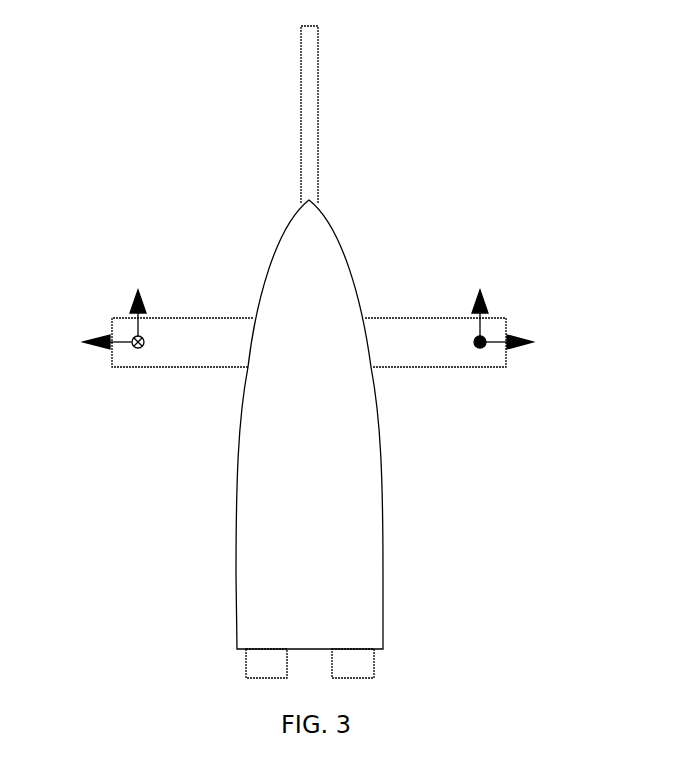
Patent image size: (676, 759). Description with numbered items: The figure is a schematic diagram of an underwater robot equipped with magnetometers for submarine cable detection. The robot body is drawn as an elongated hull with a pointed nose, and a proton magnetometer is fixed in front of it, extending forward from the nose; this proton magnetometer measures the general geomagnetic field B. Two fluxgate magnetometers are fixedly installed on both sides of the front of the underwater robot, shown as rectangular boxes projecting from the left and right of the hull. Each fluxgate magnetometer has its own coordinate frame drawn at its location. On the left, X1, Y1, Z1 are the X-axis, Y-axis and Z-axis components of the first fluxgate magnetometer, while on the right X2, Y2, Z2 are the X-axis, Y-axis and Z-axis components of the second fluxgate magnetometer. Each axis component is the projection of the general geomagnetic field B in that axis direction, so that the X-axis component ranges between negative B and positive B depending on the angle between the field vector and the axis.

The general geomagnetic field B is at (321, 114).
The X-axis component of the first fluxgate magnetometer X1 is at (93, 345).
The Y-axis component of the first fluxgate magnetometer Y1 is at (140, 296).
The Z-axis component of the first fluxgate magnetometer Z1 is at (153, 345).
The X-axis component of the second fluxgate magnetometer X2 is at (523, 345).
The Y-axis component of the second fluxgate magnetometer Y2 is at (480, 296).
The Z-axis component of the second fluxgate magnetometer Z2 is at (463, 345).